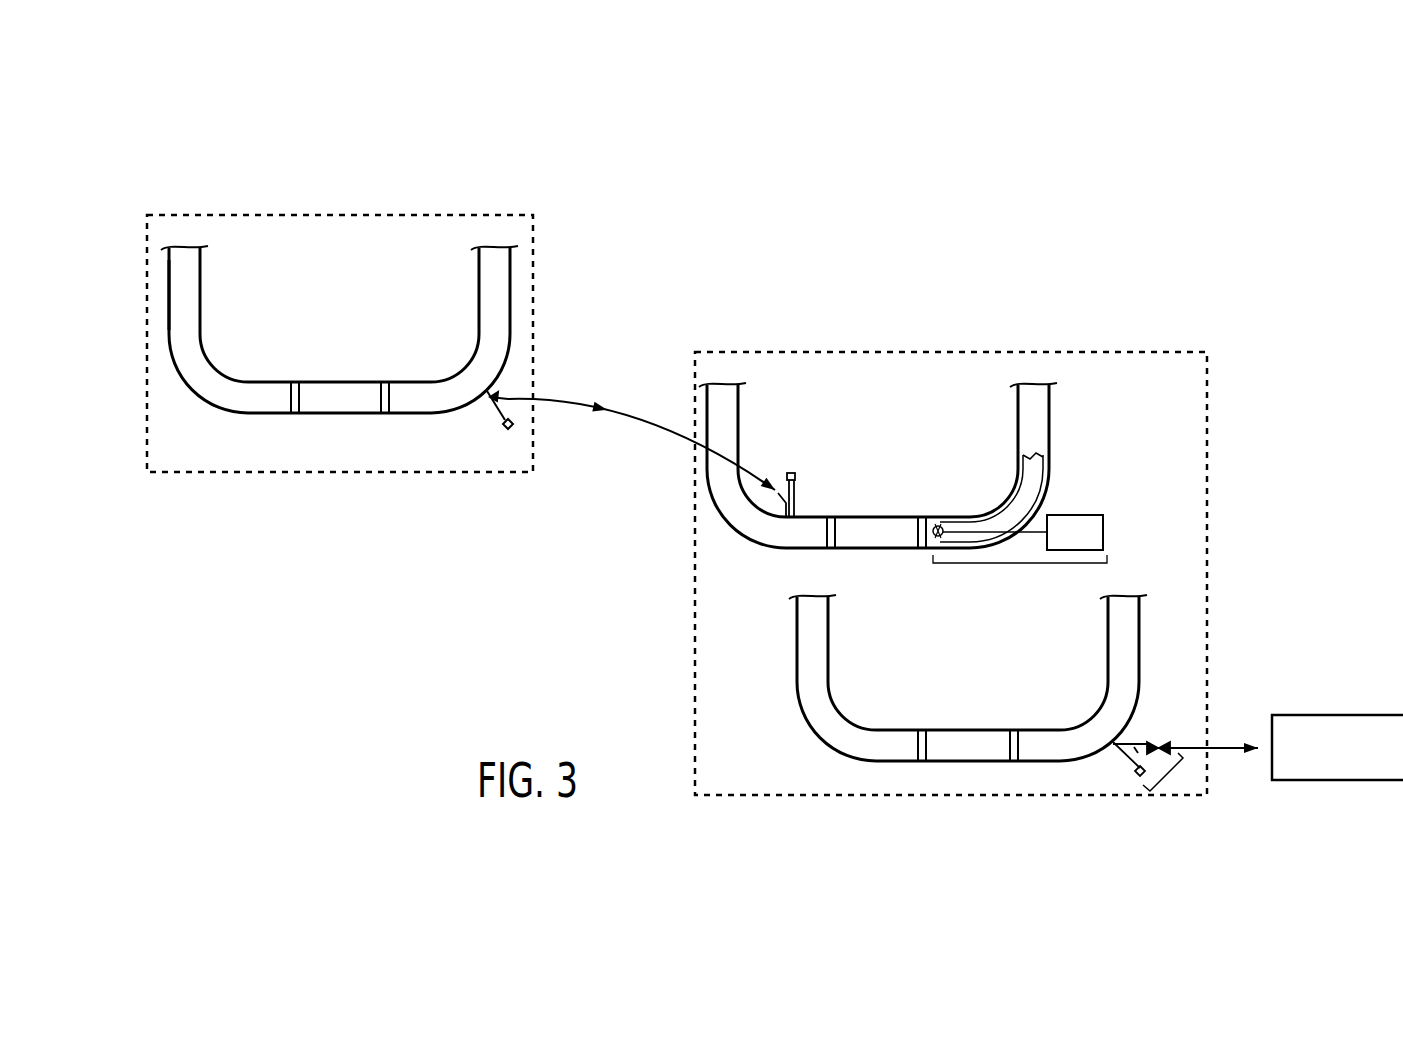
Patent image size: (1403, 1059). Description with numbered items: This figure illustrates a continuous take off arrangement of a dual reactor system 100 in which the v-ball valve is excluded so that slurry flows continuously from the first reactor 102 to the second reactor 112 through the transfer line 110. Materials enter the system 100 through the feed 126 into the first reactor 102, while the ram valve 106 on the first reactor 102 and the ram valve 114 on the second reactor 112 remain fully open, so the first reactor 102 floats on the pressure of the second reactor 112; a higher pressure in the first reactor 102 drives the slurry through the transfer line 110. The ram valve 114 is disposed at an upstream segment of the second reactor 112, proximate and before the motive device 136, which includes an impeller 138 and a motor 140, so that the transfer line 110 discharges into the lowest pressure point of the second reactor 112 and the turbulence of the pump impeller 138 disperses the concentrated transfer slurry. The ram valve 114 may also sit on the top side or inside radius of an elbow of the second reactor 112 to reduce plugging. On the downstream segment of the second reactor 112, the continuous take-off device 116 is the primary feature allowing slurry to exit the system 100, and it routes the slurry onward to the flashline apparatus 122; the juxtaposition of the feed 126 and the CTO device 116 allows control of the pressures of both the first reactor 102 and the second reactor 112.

The system 100 is at (967, 127).
The first reactor 102 is at (323, 304).
The ram valve 106 is at (493, 413).
The transfer line 110 is at (580, 404).
The second reactor 112 is at (891, 442).
The ram valve 114 is at (796, 508).
The continuous take-off device 116 is at (1165, 775).
The flashline apparatus 122 is at (1318, 715).
The feed 126 is at (170, 295).
The motive device 136 is at (1020, 565).
The impeller 138 is at (937, 541).
The motor 140 is at (1075, 515).